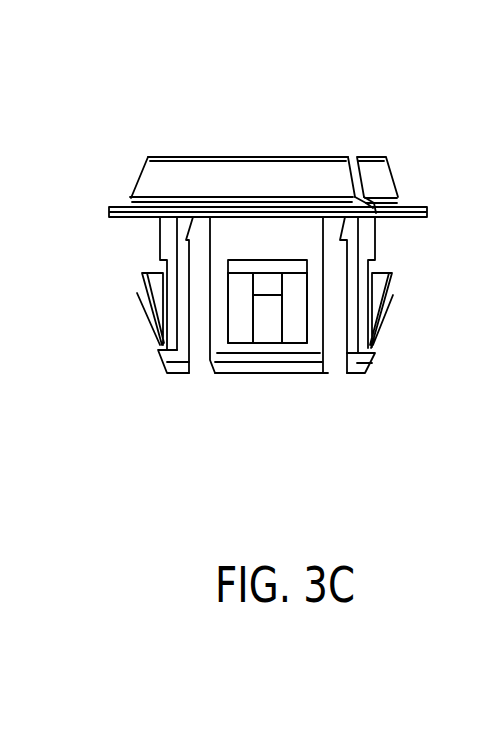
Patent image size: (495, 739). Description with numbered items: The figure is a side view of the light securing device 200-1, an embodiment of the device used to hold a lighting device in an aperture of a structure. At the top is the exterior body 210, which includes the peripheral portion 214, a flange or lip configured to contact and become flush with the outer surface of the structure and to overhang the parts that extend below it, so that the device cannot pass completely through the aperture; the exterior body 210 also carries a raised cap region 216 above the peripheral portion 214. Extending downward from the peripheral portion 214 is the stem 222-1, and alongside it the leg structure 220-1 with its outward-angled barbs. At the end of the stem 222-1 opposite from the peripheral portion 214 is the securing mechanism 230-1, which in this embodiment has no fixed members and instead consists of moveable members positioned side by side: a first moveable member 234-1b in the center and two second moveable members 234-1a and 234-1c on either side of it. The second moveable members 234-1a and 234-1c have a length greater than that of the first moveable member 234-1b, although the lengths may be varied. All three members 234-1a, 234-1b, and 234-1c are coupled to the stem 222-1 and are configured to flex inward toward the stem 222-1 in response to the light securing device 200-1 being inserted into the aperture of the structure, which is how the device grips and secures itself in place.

The light securing device 200-1 is at (408, 112).
The exterior body 210 is at (158, 69).
The peripheral portion 214 is at (132, 202).
The cap wall 216 is at (173, 157).
The stem 222-1 is at (158, 245).
The housing body 220-1 is at (375, 372).
The securing mechanism 230-1 is at (405, 490).
The second moveable member 234-1a is at (240, 320).
The first moveable member 234-1b is at (273, 320).
The second moveable member 234-1c is at (298, 315).